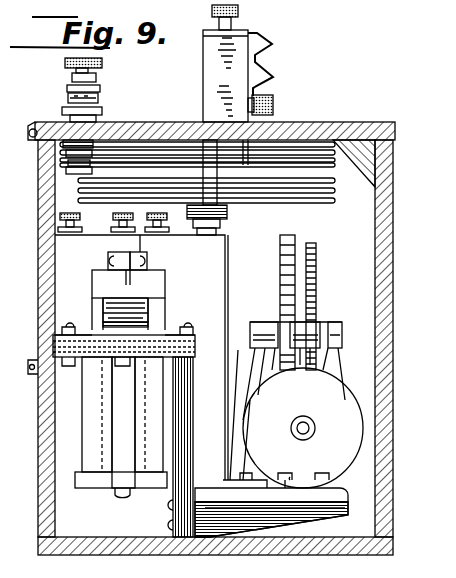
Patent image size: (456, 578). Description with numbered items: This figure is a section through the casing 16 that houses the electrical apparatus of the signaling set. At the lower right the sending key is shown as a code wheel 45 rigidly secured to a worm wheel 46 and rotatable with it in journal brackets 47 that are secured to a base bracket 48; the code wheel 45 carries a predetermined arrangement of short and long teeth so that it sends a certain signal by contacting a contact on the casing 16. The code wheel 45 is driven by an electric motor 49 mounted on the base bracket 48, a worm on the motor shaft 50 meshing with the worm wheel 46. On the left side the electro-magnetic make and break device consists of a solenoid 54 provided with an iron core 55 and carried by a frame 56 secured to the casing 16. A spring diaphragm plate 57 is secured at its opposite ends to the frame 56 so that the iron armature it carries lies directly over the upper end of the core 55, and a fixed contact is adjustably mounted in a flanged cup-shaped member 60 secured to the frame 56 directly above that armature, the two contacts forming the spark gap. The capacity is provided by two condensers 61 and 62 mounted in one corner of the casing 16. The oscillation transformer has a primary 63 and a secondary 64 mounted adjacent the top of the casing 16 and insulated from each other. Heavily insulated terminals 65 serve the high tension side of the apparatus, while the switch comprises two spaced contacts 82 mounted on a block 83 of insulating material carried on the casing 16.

The casing 16 is at (40, 276).
The code wheel 45 is at (288, 235).
The worm wheel 46 is at (316, 246).
The journal brackets 47 is at (260, 322).
The base bracket 48 is at (292, 503).
The electric motor 49 is at (303, 428).
The motor shaft 50 is at (303, 440).
The solenoid 54 is at (124, 447).
The iron core 55 is at (121, 427).
The frame 56 is at (195, 346).
The spring diaphragm plate 57 is at (103, 318).
The flanged cup-shaped member 60 is at (128, 291).
The condenser 61 is at (140, 357).
The condenser 62 is at (141, 357).
The primary 63 is at (113, 219).
The secondary 64 is at (197, 187).
The heavily insulated terminals 65 is at (68, 68).
The spaced contacts 82 is at (270, 42).
The block of insulating material 83 is at (225, 63).